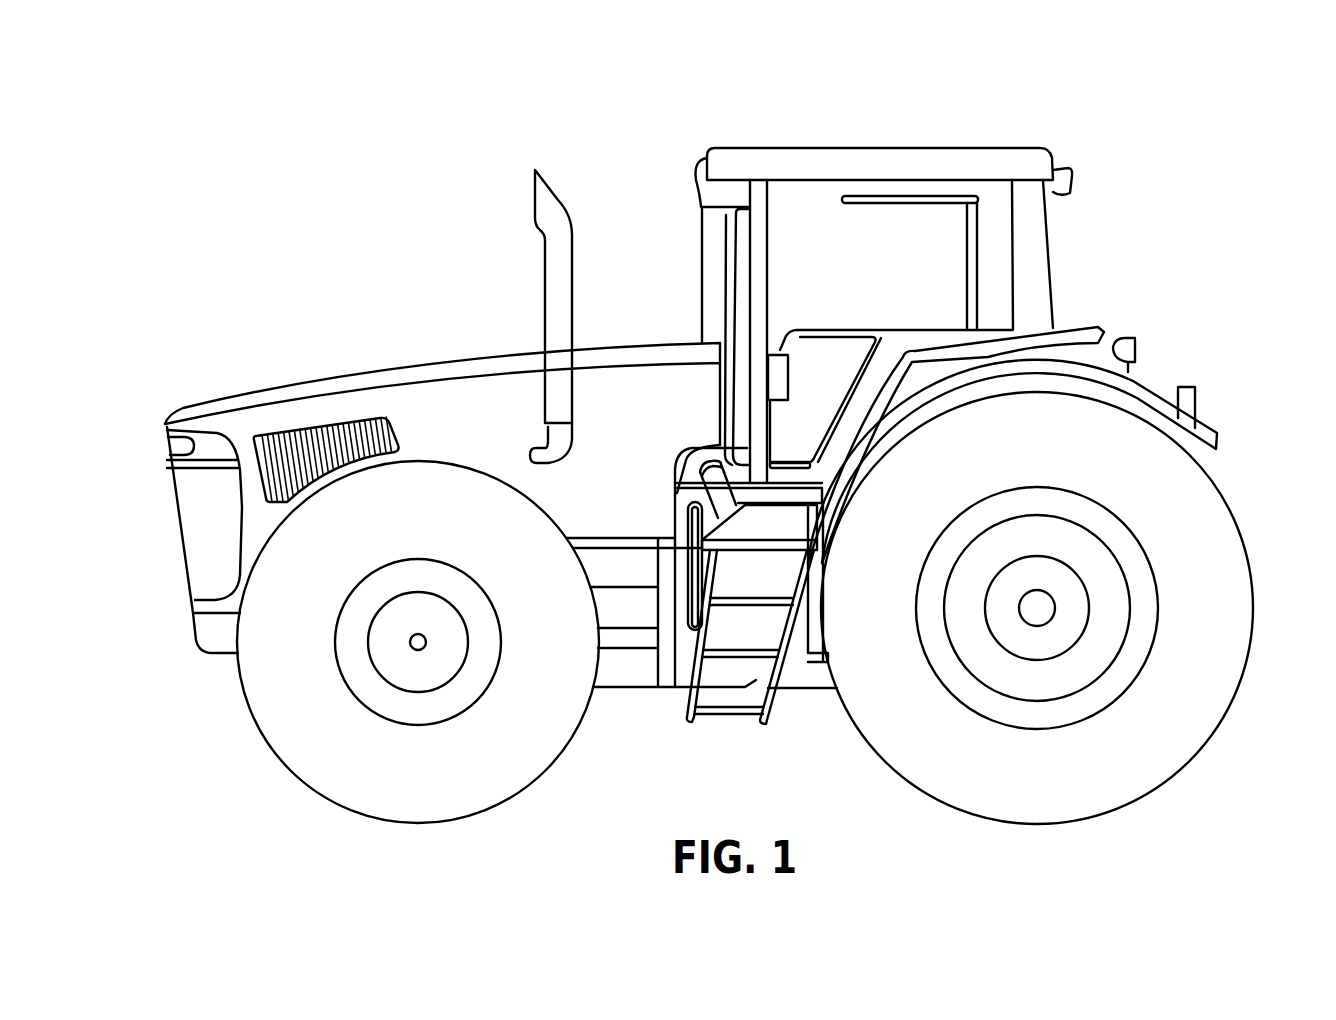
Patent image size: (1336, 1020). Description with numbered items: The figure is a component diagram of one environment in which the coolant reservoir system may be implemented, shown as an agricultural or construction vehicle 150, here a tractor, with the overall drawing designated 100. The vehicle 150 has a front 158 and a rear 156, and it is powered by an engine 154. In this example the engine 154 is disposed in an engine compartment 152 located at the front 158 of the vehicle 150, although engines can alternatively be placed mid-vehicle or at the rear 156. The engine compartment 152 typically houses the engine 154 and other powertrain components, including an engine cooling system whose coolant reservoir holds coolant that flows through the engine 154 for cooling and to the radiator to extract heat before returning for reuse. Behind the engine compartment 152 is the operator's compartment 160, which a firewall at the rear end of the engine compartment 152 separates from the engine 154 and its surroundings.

The work vehicle (tractor) 100 is at (700, 448).
The agricultural or construction vehicle 150 is at (610, 135).
The engine compartment 152 is at (308, 312).
The engine 154 is at (375, 308).
The rear 156 is at (1230, 390).
The front 158 is at (142, 405).
The operator's compartment 160 is at (830, 180).